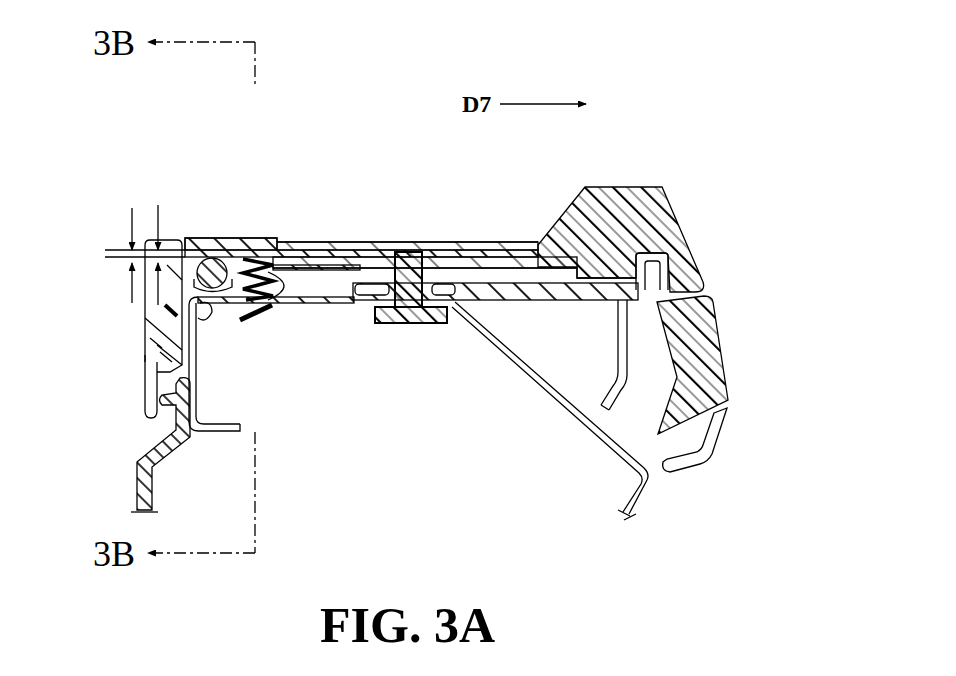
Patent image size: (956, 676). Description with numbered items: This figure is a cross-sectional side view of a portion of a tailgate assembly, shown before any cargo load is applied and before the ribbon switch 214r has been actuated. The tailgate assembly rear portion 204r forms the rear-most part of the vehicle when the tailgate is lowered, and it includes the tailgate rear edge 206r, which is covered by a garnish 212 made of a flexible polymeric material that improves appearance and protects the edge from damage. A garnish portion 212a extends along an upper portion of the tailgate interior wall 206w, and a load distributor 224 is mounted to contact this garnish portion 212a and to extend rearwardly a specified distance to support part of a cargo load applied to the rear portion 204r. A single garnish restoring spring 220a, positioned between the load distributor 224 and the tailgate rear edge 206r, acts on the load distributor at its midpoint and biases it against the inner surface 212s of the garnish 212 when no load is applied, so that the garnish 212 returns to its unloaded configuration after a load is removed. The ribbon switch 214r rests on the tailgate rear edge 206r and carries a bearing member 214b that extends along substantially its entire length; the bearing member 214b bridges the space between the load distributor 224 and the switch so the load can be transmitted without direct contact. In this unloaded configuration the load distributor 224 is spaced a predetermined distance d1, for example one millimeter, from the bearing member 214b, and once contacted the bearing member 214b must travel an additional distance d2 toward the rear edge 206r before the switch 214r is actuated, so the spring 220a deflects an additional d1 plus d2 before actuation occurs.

The garnish 212 is at (457, 242).
The inner surface of the garnish 212s is at (278, 238).
The garnish portion 212a is at (146, 328).
The ribbon switch 214r is at (140, 352).
The bearing member 214b is at (207, 246).
The load distributor 224 is at (216, 240).
The garnish restoring spring 220a is at (284, 302).
The tailgate interior wall 206w is at (197, 346).
The tailgate rear edge 206r is at (343, 305).
The tailgate assembly rear portion 204r is at (720, 276).
The spacing distance d1 is at (164, 225).
The actuation distance d2 is at (132, 302).